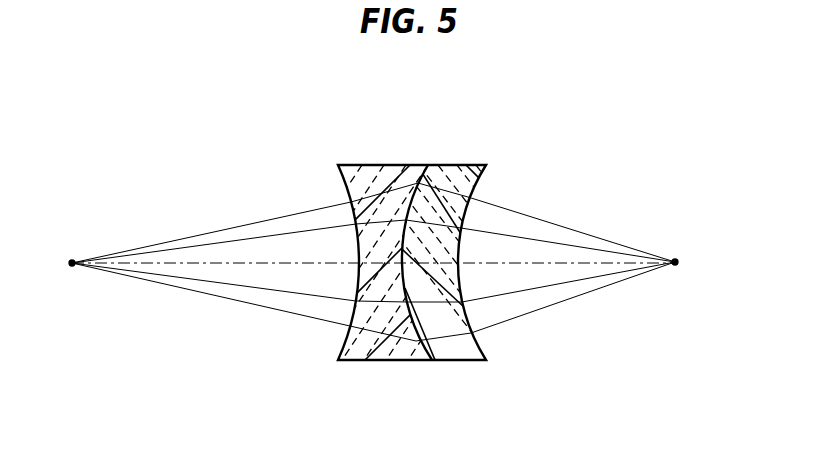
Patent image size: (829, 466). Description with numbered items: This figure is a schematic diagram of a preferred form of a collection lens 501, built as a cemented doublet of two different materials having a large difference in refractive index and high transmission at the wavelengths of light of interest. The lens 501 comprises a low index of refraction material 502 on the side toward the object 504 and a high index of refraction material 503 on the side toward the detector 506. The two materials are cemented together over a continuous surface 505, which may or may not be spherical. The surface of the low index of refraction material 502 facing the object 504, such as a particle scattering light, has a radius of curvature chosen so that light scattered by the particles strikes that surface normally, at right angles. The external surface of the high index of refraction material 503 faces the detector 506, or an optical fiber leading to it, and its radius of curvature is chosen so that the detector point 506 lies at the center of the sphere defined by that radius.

The collection lens 501 is at (418, 246).
The low index of refraction material 502 is at (373, 163).
The high index of refraction material 503 is at (481, 354).
The object 504 is at (71, 260).
The continuous surface 505 is at (421, 353).
The detector 506 is at (677, 258).